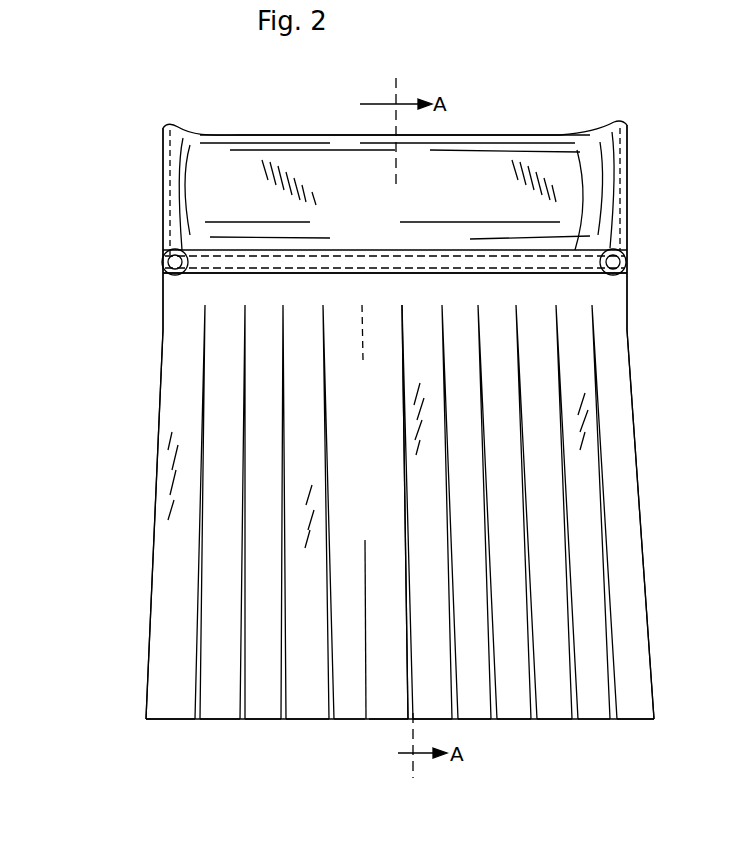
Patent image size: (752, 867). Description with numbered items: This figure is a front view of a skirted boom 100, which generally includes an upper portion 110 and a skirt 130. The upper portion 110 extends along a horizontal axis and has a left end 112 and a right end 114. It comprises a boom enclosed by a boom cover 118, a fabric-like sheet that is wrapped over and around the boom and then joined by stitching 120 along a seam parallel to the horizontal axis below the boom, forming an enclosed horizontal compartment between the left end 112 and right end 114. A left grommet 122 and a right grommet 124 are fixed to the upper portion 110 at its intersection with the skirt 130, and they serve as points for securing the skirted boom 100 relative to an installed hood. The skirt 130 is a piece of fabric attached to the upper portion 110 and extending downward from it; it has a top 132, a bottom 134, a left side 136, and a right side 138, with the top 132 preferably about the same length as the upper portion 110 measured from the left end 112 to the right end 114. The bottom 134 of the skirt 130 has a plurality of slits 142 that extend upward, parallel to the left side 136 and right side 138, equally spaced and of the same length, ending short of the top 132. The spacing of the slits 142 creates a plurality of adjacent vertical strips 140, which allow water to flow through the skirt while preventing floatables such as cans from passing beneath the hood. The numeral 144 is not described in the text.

The skirted boom 100 is at (525, 86).
The upper portion 110 is at (118, 214).
The left end 112 is at (162, 190).
The right end 114 is at (630, 192).
The boom cover 118 is at (335, 200).
The stitching 120 is at (245, 268).
The left grommet 122 is at (165, 272).
The right grommet 124 is at (628, 262).
The skirt 130 is at (370, 562).
The top 132 is at (400, 278).
The bottom 134 is at (450, 720).
The left side 136 is at (155, 460).
The right side 138 is at (637, 441).
The vertical strips 140 is at (595, 719).
The slits 142 is at (327, 585).
The perforation 144 is at (285, 312).